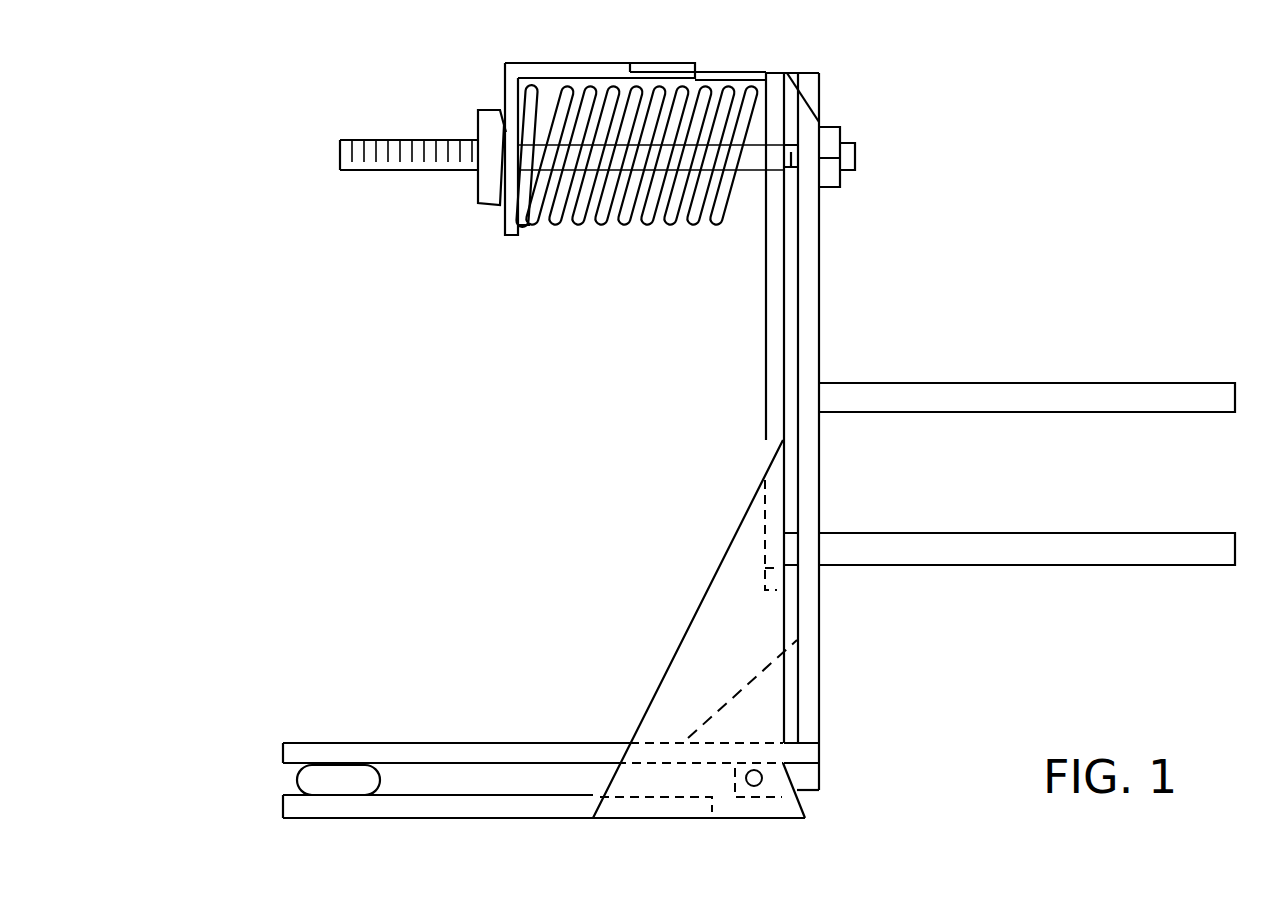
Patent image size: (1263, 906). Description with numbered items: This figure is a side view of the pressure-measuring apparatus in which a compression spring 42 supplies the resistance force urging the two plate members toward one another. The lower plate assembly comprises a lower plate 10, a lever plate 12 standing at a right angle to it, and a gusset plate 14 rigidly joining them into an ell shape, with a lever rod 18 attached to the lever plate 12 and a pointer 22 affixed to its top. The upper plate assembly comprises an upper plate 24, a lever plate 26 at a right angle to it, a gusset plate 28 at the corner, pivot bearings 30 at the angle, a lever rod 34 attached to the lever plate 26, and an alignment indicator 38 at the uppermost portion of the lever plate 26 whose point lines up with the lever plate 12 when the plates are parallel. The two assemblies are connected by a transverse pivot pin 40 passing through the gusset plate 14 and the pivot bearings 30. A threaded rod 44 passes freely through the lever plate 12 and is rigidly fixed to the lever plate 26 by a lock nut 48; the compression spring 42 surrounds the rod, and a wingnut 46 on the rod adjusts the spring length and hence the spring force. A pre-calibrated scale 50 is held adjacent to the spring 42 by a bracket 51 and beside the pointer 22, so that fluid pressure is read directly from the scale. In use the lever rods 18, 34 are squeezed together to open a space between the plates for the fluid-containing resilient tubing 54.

The lower plate 10 is at (435, 818).
The lever plate 12 is at (763, 340).
The gusset plate 14 is at (700, 605).
The lever rod 18 is at (965, 565).
The pointer 22 is at (718, 72).
The upper plate 24 is at (475, 743).
The lever plate 26 is at (820, 322).
The gusset plate 28 is at (790, 700).
The pivot bearings 30 is at (810, 780).
The lever rod 34 is at (990, 383).
The alignment indicator 38 is at (803, 68).
The pivot pin 40 is at (753, 785).
The compression spring 42 is at (640, 228).
The threaded rod 44 is at (378, 170).
The wingnut 46 is at (485, 110).
The lock nut 48 is at (833, 122).
The pre-calibrated scale 50 is at (555, 63).
The bracket 51 is at (512, 237).
The fluid-containing resilient tubing 54 is at (297, 778).